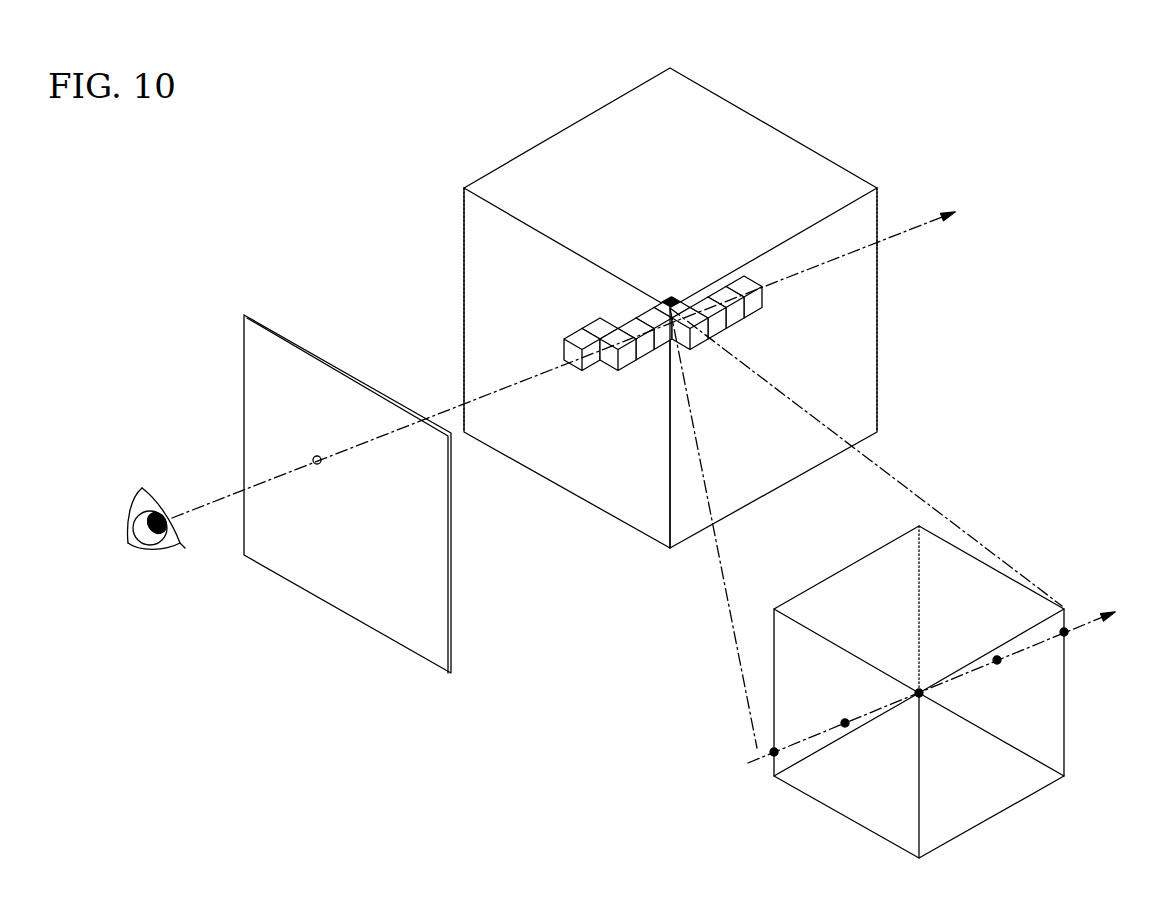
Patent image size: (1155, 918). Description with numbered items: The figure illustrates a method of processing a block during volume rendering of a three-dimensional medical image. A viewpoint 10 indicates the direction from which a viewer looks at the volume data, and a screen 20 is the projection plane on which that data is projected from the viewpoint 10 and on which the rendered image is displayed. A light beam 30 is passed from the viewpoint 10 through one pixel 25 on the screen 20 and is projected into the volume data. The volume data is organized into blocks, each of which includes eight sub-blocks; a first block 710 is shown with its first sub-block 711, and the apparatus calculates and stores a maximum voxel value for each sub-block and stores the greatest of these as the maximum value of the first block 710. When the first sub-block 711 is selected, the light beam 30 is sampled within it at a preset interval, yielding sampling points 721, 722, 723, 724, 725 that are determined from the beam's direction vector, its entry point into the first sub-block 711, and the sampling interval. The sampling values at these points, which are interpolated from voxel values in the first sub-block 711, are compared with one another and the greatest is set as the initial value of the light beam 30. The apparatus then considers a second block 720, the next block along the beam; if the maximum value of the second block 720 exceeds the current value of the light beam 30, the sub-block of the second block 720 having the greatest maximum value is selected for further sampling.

The viewpoint 10 is at (141, 510).
The screen 20 is at (302, 347).
The pixel 25 is at (313, 458).
The light beam 30 is at (903, 228).
The first block 710 is at (660, 300).
The first sub-block 711 is at (670, 300).
The second block 720 is at (655, 322).
The sampling point 721 is at (772, 756).
The sampling point 722 is at (845, 727).
The sampling point 723 is at (919, 697).
The sampling point 724 is at (997, 664).
The sampling point 725 is at (1066, 634).